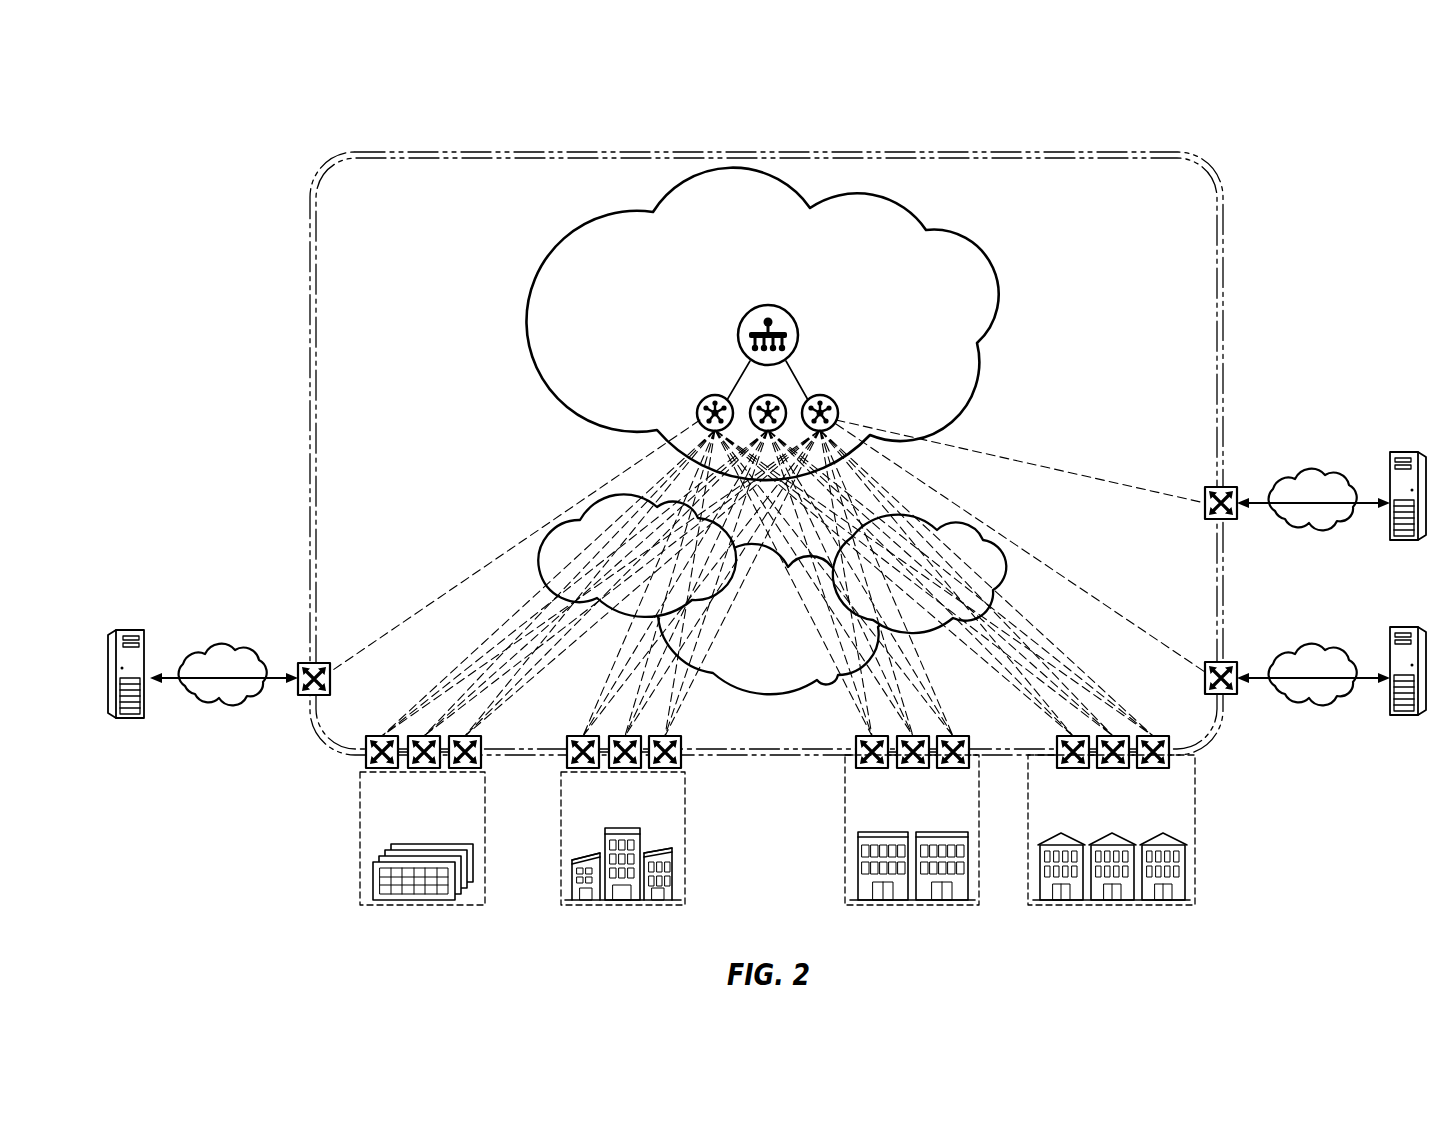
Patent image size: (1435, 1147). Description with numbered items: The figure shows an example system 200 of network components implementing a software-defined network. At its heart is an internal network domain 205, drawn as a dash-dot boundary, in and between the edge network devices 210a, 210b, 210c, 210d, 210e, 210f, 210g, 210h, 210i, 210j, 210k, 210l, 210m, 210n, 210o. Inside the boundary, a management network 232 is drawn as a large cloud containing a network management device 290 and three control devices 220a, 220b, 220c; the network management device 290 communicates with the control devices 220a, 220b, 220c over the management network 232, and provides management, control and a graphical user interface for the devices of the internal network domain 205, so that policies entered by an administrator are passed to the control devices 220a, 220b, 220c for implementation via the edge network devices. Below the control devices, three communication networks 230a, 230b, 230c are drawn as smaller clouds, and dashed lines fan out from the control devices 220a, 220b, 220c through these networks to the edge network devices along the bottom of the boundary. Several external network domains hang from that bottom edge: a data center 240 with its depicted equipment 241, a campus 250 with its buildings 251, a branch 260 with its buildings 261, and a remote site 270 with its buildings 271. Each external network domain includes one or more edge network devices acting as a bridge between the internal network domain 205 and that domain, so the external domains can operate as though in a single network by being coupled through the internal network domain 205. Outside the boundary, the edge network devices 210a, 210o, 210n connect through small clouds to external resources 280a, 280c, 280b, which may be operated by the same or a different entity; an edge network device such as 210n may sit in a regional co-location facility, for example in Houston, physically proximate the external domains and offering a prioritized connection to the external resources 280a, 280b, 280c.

The system 200 is at (1224, 112).
The internal network domain 205 is at (1226, 218).
The management network 232 is at (958, 233).
The network management device 290 is at (799, 326).
The control device 220a is at (700, 403).
The control device 220b is at (757, 398).
The control device 220c is at (835, 403).
The communication network 230a is at (549, 540).
The communication network 230b is at (784, 648).
The communication network 230c is at (1006, 540).
The edge network device 210a is at (306, 663).
The edge network device 210b is at (367, 768).
The edge network device 210c is at (424, 770).
The edge network device 210d is at (479, 768).
The edge network device 210e is at (569, 768).
The edge network device 210f is at (625, 770).
The edge network device 210g is at (680, 768).
The edge network device 210h is at (857, 768).
The edge network device 210i is at (913, 770).
The edge network device 210j is at (953, 770).
The edge network device 210k is at (1066, 768).
The edge network device 210l is at (1125, 768).
The edge network device 210m is at (1175, 768).
The edge network device 210n is at (1230, 662).
The edge network device 210o is at (1230, 487).
The external resource 280a is at (127, 628).
The external resource 280b is at (1410, 625).
The external resource 280c is at (1410, 450).
The data center 240 is at (428, 857).
The server racks 241 is at (389, 905).
The campus 250 is at (629, 857).
The campus buildings 251 is at (592, 905).
The branch 260 is at (920, 849).
The office buildings 261 is at (888, 905).
The remote site 270 is at (1117, 849).
The residential buildings 271 is at (1098, 905).